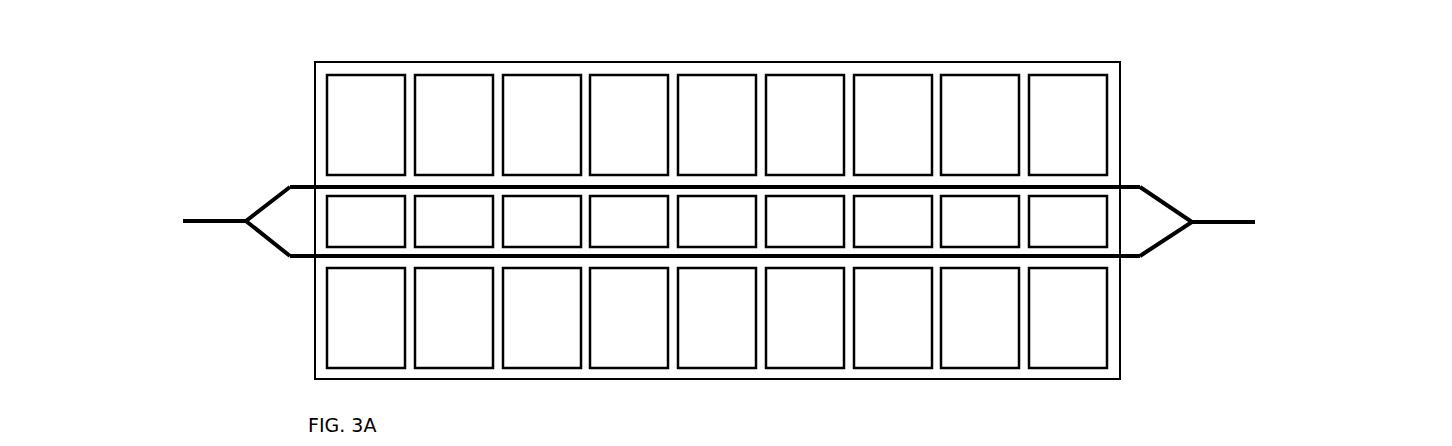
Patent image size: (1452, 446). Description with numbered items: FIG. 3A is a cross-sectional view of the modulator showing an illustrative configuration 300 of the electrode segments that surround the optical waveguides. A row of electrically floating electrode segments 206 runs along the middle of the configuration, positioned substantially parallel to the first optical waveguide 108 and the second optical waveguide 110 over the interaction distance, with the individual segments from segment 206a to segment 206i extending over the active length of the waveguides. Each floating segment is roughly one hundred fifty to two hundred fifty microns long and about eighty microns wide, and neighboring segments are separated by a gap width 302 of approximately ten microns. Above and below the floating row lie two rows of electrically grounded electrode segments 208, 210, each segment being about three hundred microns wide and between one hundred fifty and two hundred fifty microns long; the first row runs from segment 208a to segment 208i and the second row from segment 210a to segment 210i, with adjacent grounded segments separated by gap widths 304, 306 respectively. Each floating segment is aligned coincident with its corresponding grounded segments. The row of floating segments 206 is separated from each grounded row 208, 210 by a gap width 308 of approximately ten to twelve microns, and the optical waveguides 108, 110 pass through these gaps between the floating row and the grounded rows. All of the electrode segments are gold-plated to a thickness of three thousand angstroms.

The configuration 300 is at (693, 45).
The gap width 304 is at (1024, 78).
The electrically grounded electrode segments 208 is at (765, 125).
The electrically grounded electrode segment 208i is at (390, 137).
The electrically grounded electrode segment 208a is at (1092, 137).
The gap width 302 is at (1022, 205).
The first optical waveguide 108 is at (1128, 186).
The electrically floating electrode segments 206 is at (791, 221).
The electrically floating electrode segment 206i is at (390, 233).
The electrically floating electrode segment 206a is at (1092, 233).
The second optical waveguide 110 is at (1127, 259).
The electrically grounded electrode segments 210 is at (759, 318).
The electrically grounded electrode segment 210i is at (390, 330).
The electrically grounded electrode segment 210a is at (1092, 330).
The gap width 306 is at (1026, 360).
The gap width 308 is at (318, 183).